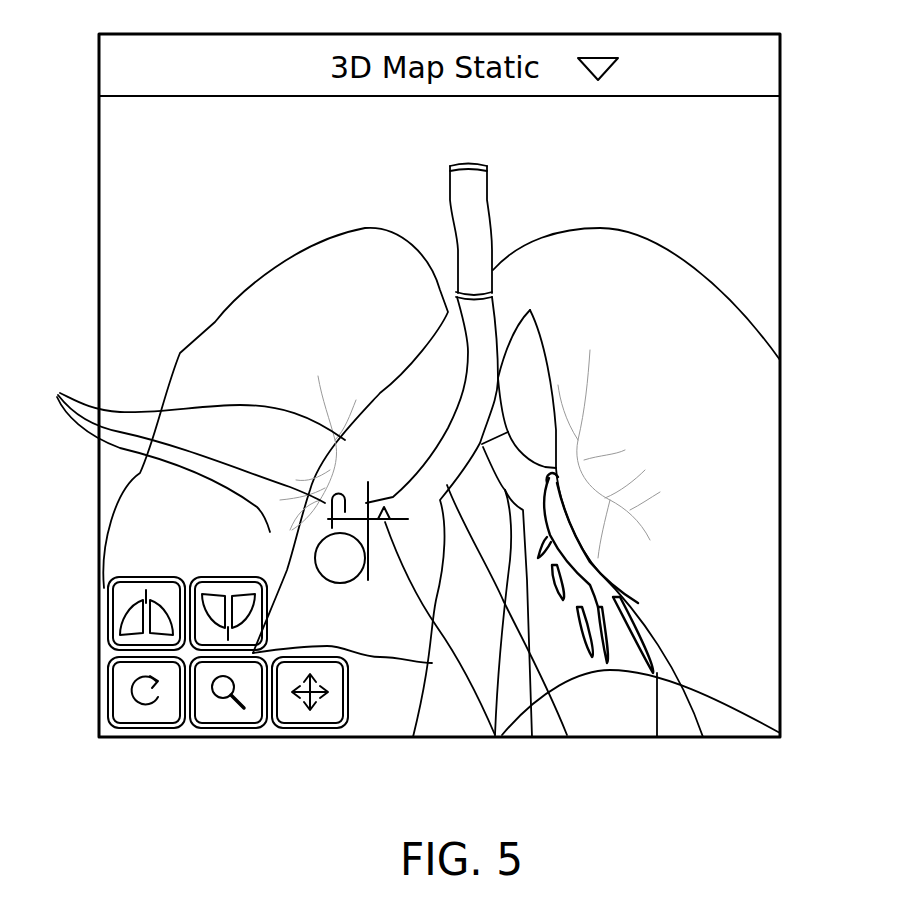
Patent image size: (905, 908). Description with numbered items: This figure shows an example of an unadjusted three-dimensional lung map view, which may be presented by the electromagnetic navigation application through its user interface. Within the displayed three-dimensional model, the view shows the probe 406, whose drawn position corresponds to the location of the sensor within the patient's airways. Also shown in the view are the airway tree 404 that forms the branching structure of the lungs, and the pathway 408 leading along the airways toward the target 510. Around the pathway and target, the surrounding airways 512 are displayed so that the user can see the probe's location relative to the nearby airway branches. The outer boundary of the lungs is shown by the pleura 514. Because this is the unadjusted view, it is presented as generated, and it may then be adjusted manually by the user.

The airway tree 404 is at (703, 737).
The probe 406 is at (495, 735).
The pathway 408 is at (567, 735).
The target 510 is at (342, 583).
The surrounding airways 512 is at (180, 449).
The pleura 514 is at (705, 325).